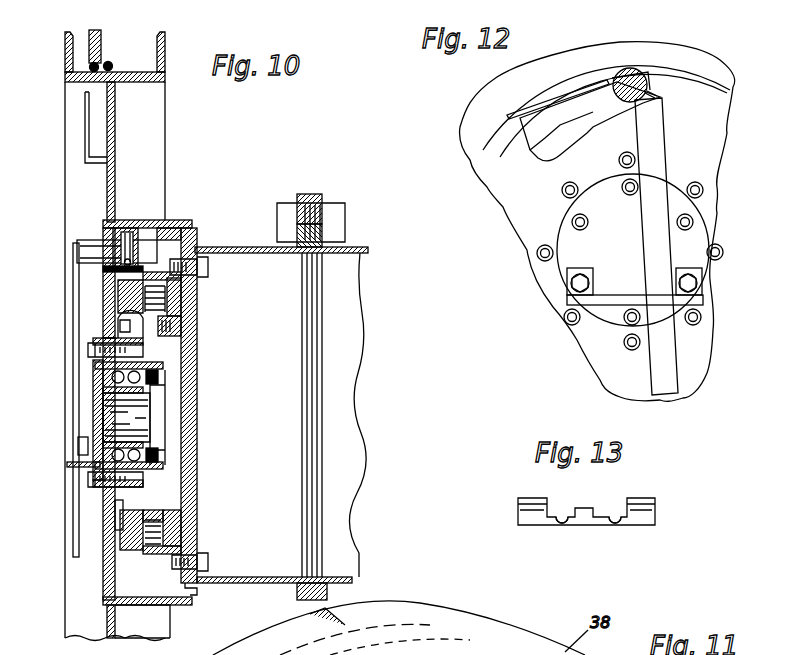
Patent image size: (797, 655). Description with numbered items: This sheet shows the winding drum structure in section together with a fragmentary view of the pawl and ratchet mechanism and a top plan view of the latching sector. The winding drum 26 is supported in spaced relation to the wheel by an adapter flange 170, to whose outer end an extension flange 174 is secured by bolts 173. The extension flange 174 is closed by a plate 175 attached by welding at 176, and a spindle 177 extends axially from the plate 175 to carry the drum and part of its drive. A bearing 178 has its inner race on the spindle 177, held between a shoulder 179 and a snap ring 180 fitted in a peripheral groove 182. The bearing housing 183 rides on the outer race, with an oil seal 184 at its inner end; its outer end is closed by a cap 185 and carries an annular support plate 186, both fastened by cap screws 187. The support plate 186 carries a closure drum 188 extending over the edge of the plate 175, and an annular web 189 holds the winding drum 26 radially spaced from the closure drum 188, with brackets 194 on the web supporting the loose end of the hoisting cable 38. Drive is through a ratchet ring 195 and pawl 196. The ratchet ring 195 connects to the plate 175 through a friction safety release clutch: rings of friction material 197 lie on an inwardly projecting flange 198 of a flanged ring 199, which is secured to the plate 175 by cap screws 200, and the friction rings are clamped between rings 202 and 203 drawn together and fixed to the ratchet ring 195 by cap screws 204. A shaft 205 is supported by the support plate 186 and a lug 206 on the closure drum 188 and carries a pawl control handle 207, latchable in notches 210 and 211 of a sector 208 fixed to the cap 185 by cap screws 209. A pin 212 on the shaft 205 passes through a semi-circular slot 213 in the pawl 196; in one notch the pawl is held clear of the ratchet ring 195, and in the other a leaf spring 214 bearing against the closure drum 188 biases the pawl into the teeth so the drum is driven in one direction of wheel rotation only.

In FIG. 10, the winding drum 26 is at (63, 157).
In FIG. 10, the hoisting cable 38 is at (101, 53).
In FIG. 10, the adapter flange 170 is at (362, 246).
In FIG. 10, the bolts 173 is at (299, 200).
In FIG. 10, the extension flange 174 is at (228, 247).
In FIG. 10, the plate 175 is at (200, 500).
In FIG. 10, the welding 176 is at (197, 590).
In FIG. 10, the spindle 177 is at (175, 400).
In FIG. 10, the bearing 178 is at (112, 376).
In FIG. 10, the shoulder 179 is at (155, 433).
In FIG. 10, the snap ring 180 is at (103, 388).
In FIG. 10, the peripheral groove 182 is at (100, 425).
In FIG. 10, the bearing housing 183 is at (195, 345).
In FIG. 10, the oil seal 184 is at (160, 376).
In FIG. 10, the cap 185 is at (93, 476).
In FIG. 12, the cap 185 is at (687, 243).
In FIG. 10, the annular support plate 186 is at (103, 297).
In FIG. 10, the cap screws 187 is at (88, 350).
In FIG. 10, the closure drum 188 is at (171, 607).
In FIG. 12, the closure drum 188 is at (710, 82).
In FIG. 10, the annular web 189 is at (115, 150).
In FIG. 10, the brackets 194 is at (85, 105).
In FIG. 10, the ratchet ring 195 is at (115, 546).
In FIG. 12, the ratchet ring 195 is at (573, 143).
In FIG. 10, the pawl 196 is at (115, 271).
In FIG. 12, the pawl 196 is at (567, 110).
In FIG. 10, the rings of friction material 197 is at (178, 307).
In FIG. 10, the inwardly projecting flange 198 is at (167, 318).
In FIG. 10, the flanged ring 199 is at (157, 294).
In FIG. 10, the cap screws 200 is at (208, 266).
In FIG. 10, the ring 202 is at (165, 522).
In FIG. 10, the ring 203 is at (170, 540).
In FIG. 10, the cap screws 204 is at (118, 326).
In FIG. 10, the shaft 205 is at (83, 243).
In FIG. 12, the shaft 205 is at (648, 70).
In FIG. 10, the lug 206 is at (175, 221).
In FIG. 10, the pawl control handle 207 is at (73, 257).
In FIG. 12, the pawl control handle 207 is at (667, 357).
In FIG. 10, the sector 208 is at (67, 464).
In FIG. 12, the sector 208 is at (693, 300).
In FIG. 13, the sector 208 is at (655, 511).
In FIG. 10, the cap screws 209 is at (78, 448).
In FIG. 12, the cap screws 209 is at (575, 287).
In FIG. 13, the notch 210 is at (562, 520).
In FIG. 13, the notch 211 is at (615, 520).
In FIG. 10, the pin 212 is at (126, 258).
In FIG. 12, the pin 212 is at (655, 97).
In FIG. 10, the slot 213 is at (131, 228).
In FIG. 12, the slot 213 is at (632, 70).
In FIG. 12, the leaf spring 214 is at (511, 120).